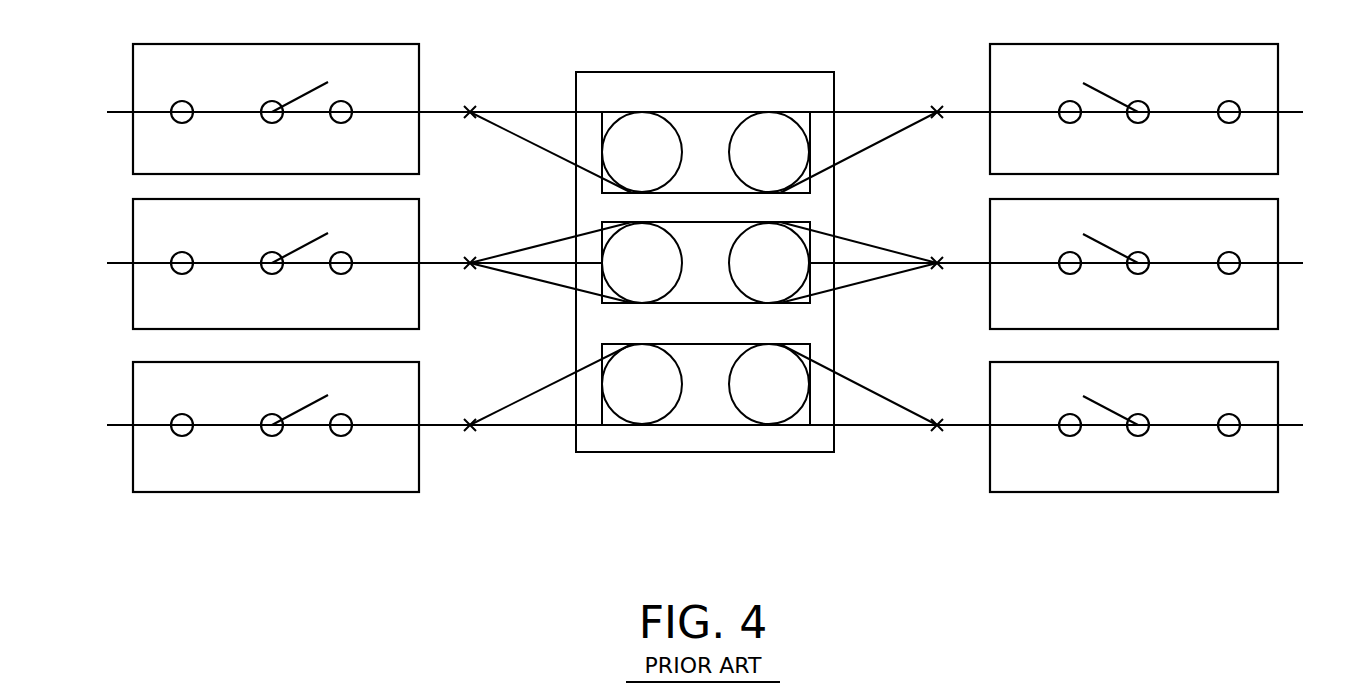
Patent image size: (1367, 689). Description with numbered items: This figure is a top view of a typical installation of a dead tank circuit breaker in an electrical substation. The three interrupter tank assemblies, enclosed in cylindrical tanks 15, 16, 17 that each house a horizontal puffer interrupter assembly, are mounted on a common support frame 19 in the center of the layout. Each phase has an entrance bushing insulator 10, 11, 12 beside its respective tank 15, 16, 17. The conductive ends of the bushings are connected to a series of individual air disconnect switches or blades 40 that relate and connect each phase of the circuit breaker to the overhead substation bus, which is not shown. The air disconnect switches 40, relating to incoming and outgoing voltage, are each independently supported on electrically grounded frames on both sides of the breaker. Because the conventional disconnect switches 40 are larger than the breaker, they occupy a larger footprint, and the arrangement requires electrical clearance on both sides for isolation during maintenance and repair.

The entrance bushing insulator 10 is at (642, 384).
The entrance bushing insulator 11 is at (642, 263).
The entrance bushing insulator 12 is at (642, 152).
The cylindrical tank 15 is at (751, 384).
The cylindrical tank 16 is at (752, 263).
The cylindrical tank 17 is at (751, 152).
The common support frame 19 is at (683, 72).
The air disconnect switch 40 is at (119, 112).